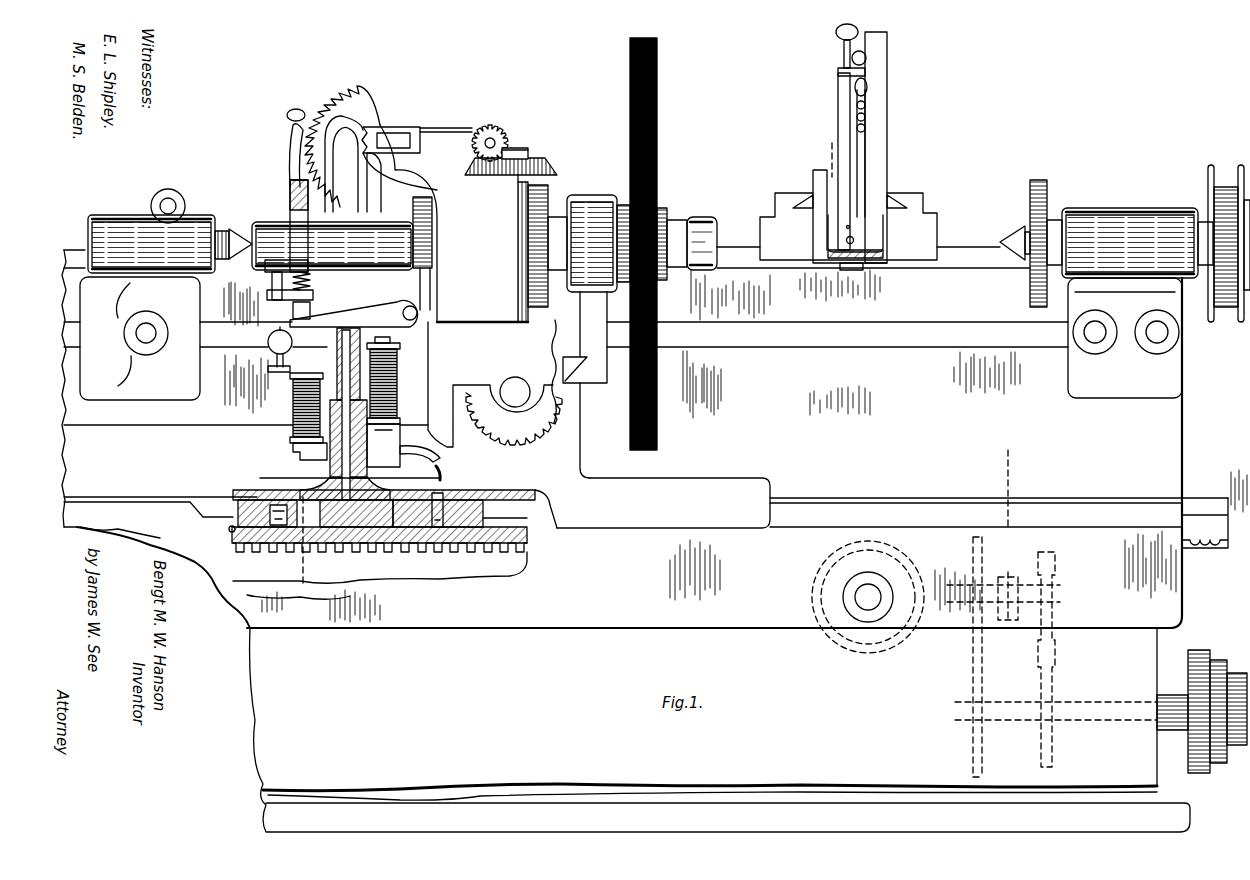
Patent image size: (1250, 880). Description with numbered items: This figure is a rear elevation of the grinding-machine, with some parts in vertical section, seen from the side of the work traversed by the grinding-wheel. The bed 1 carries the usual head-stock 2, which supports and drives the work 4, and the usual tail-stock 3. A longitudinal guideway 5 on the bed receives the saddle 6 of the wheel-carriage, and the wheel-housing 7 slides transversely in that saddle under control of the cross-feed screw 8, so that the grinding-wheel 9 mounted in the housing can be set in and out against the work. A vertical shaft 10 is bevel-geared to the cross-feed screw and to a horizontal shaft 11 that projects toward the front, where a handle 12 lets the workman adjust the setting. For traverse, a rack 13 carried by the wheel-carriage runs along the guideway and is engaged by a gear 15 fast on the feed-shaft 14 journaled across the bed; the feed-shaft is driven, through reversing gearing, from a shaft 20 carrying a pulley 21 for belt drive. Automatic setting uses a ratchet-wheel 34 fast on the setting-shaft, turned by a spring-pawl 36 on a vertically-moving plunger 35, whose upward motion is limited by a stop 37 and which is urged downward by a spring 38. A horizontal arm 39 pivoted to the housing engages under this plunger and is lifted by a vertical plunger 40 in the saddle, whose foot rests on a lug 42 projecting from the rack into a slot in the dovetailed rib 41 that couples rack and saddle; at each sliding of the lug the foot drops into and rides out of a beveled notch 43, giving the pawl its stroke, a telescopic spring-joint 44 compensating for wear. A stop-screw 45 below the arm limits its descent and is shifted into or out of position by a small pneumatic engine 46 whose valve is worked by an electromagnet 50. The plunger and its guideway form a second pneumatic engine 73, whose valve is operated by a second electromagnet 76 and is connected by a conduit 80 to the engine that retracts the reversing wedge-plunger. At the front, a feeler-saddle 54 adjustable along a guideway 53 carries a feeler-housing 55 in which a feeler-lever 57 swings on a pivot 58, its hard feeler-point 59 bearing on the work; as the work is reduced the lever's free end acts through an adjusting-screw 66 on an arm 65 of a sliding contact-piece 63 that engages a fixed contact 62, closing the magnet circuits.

The bed 1 is at (1140, 660).
The head-stock 2 is at (1095, 210).
The tail-stock 3 is at (205, 230).
The work 4 is at (700, 220).
The longitudinal guideway 5 is at (927, 503).
The saddle 6 is at (755, 480).
The wheel-housing 7 is at (600, 382).
The cross-feed screw 8 is at (507, 385).
The grinding-wheel 9 is at (658, 438).
The vertical shaft 10 is at (528, 152).
The horizontal shaft 11 is at (505, 135).
The handle 12 is at (296, 106).
The rack 13 is at (475, 545).
The feed-shaft 14 is at (855, 592).
The gear 15 is at (912, 580).
The shaft 20 is at (1238, 690).
The pulley 21 is at (1178, 728).
The ratchet-wheel 34 is at (357, 100).
The plunger 35 is at (312, 208).
The spring-pawl 36 is at (291, 160).
The stop 37 is at (268, 290).
The spring 38 is at (310, 283).
The horizontal arm 39 is at (388, 314).
The vertical plunger 40 is at (368, 309).
The dovetailed rib 41 is at (525, 505).
The lug 42 is at (405, 540).
The beveled notch 43 is at (360, 540).
The telescopic spring-joint 44 is at (305, 460).
The stop-screw 45 is at (268, 368).
The pneumatic engine 46 is at (268, 341).
The electromagnet 50 is at (293, 416).
The longitudinal guideway 53 is at (970, 247).
The feeler-saddle 54 is at (930, 215).
The feeler-housing 55 is at (890, 172).
The feeler-lever 57 is at (840, 137).
The pivot 58 is at (830, 253).
The feeler-point 59 is at (855, 240).
The fixed electrical contact 62 is at (868, 127).
The sliding contact-piece 63 is at (868, 108).
The arm 65 is at (843, 74).
The adjusting-screw 66 is at (843, 50).
The pneumatic engine 73 is at (350, 414).
The second electromagnet 76 is at (397, 392).
The conduit 80 is at (445, 462).